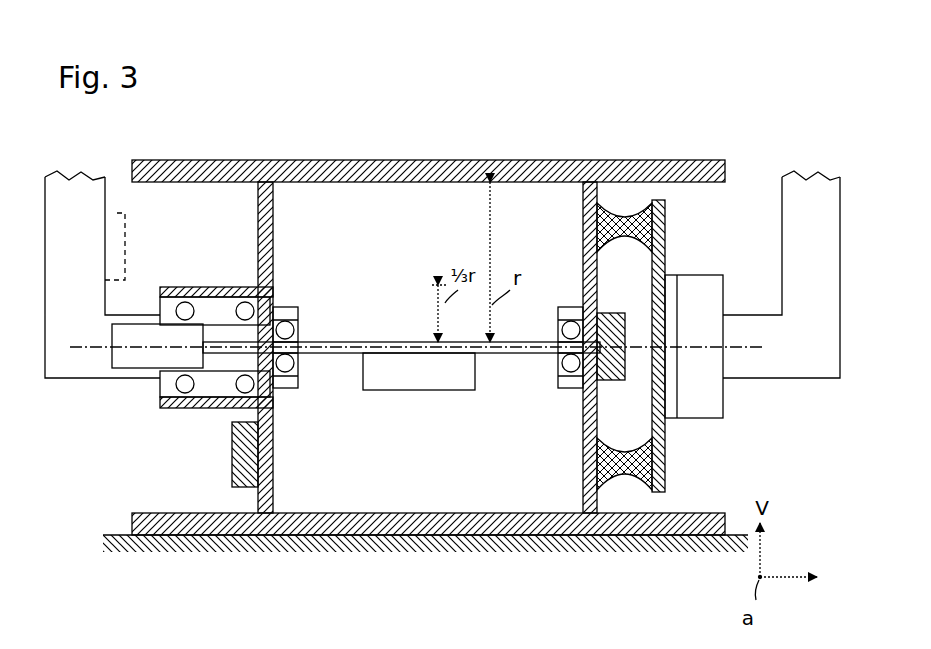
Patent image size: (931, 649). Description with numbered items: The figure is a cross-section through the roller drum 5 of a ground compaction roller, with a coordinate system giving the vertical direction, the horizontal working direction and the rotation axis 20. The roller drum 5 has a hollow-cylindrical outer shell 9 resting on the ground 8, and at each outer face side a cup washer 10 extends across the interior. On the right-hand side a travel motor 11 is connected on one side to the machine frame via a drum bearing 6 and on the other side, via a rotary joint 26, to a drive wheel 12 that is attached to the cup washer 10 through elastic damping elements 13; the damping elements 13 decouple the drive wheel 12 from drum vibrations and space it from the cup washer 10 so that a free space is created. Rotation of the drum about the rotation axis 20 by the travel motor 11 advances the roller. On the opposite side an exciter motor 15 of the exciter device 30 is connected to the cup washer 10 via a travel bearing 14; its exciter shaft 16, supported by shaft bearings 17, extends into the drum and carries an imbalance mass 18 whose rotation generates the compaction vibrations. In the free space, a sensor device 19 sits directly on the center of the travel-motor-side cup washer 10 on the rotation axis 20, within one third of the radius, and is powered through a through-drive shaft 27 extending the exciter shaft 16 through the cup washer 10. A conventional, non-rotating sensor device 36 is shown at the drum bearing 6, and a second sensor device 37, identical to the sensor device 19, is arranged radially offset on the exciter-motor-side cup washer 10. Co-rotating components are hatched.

The roller drum 5 is at (562, 112).
The drum bearing 6 is at (75, 363).
The ground 8 is at (330, 552).
The outer shell 9 is at (292, 158).
The cup washer 10 is at (275, 477).
The travel motor 11 is at (708, 392).
The drive wheel 12 is at (658, 350).
The damping elements 13 is at (635, 212).
The travel bearing 14 is at (223, 307).
The exciter motor 15 is at (157, 357).
The exciter shaft 16 is at (343, 340).
The shaft bearings 17 is at (298, 306).
The imbalance mass 18 is at (415, 385).
The sensor device 19 is at (615, 313).
The rotation axis 20 is at (120, 347).
The rotary joint 26 is at (668, 302).
The through-drive shaft 27 is at (610, 381).
The exciter device 30 is at (398, 315).
The conventional sensor device 36 is at (113, 235).
The second sensor device 37 is at (237, 443).